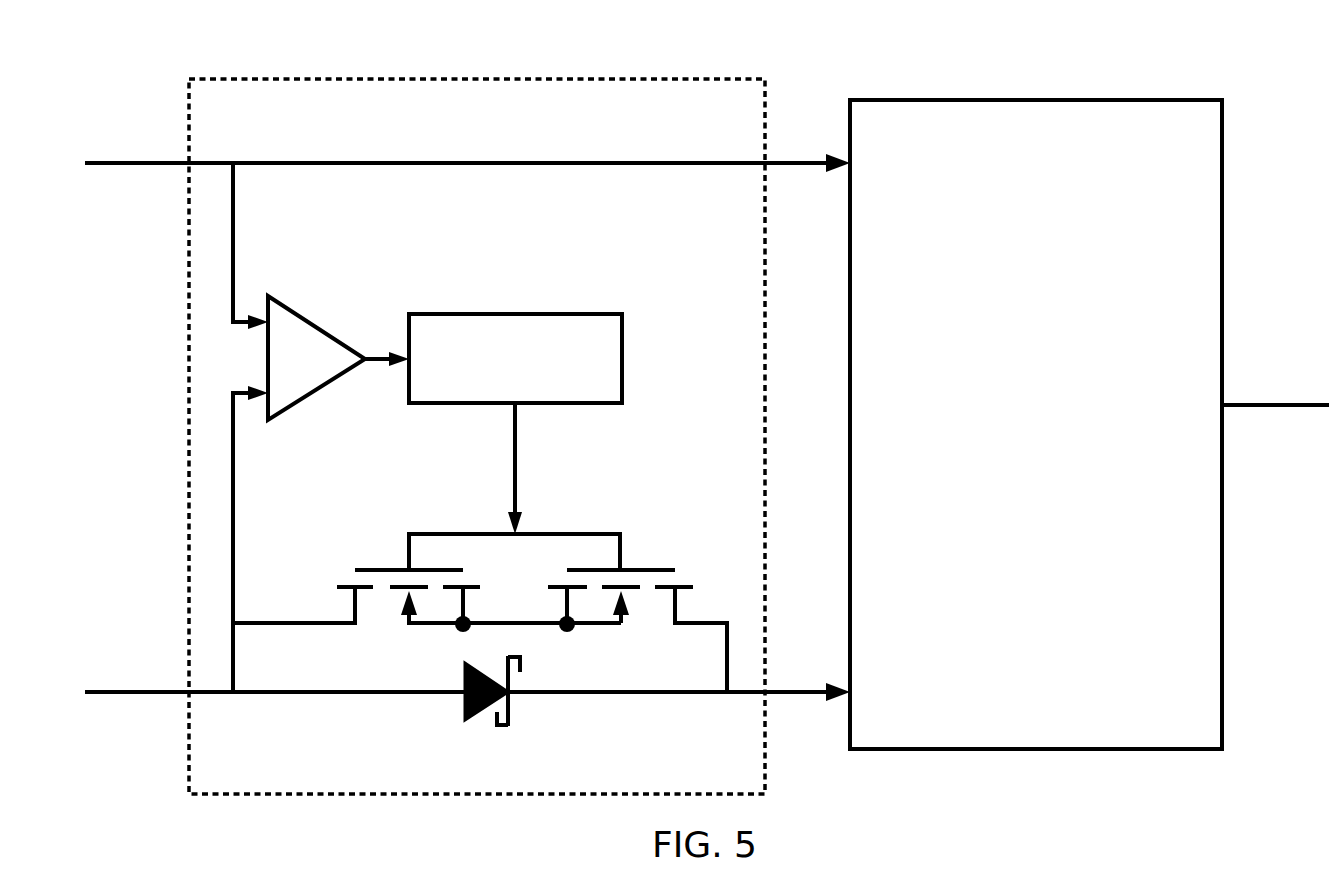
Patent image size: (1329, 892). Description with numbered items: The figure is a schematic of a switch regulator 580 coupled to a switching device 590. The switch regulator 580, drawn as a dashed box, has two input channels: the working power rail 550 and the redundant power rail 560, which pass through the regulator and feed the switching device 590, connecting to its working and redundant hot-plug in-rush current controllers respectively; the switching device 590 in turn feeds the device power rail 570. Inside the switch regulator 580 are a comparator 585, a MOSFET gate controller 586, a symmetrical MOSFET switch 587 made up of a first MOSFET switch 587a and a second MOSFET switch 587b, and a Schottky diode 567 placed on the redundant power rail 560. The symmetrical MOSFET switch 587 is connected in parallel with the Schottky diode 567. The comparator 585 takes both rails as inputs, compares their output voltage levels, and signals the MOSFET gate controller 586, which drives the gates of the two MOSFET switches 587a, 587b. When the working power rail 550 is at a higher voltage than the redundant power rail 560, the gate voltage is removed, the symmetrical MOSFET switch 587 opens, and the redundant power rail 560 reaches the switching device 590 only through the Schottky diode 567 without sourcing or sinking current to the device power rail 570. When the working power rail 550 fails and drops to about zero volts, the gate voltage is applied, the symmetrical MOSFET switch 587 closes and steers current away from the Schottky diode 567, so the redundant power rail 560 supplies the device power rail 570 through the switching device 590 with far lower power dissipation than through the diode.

The working power rail 550 is at (125, 152).
The redundant power rail 560 is at (132, 742).
The Schottky diode 567 is at (473, 762).
The device power rail 570 is at (1262, 392).
The switch regulator 580 is at (703, 104).
The comparator 585 is at (276, 370).
The MOSFET gate controller 586 is at (490, 370).
The symmetrical MOSFET switch 587 is at (529, 612).
The first MOSFET switch 587a is at (331, 556).
The second MOSFET switch 587b is at (634, 556).
The switching device 590 is at (1023, 406).